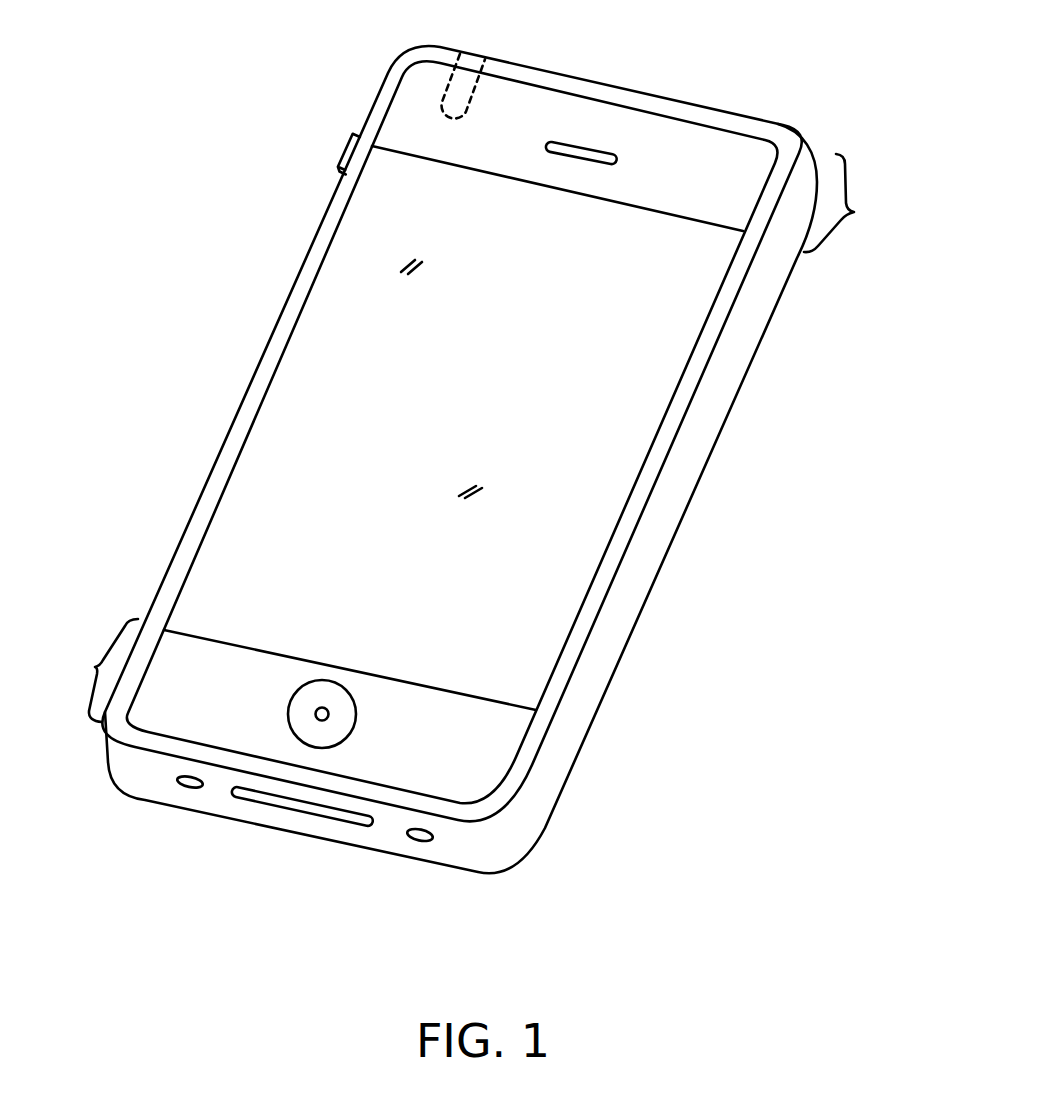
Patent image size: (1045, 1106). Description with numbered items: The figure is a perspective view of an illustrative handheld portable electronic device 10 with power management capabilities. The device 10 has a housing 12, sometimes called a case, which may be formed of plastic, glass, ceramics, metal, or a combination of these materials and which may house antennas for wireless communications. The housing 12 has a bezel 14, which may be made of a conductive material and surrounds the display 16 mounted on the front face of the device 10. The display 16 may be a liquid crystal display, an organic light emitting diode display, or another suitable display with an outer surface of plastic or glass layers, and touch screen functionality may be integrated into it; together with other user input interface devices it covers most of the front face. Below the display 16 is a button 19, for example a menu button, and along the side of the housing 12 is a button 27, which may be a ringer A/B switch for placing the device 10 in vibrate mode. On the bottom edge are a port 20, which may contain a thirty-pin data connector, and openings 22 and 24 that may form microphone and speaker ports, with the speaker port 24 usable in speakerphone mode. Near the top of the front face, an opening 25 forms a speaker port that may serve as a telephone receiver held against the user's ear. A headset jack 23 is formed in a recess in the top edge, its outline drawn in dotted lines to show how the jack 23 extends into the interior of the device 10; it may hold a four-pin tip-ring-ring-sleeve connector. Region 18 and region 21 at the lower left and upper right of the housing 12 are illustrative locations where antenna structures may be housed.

The electronic device 10 is at (862, 96).
The housing 12 is at (610, 640).
The bezel 14 is at (277, 337).
The display 16 is at (700, 267).
The region 18 is at (96, 670).
The button 19 is at (310, 750).
The port 20 is at (348, 824).
The region 21 is at (843, 203).
The opening 22 is at (188, 790).
The jack 23 is at (443, 92).
The speaker port 24 is at (422, 843).
The speaker port 25 is at (586, 150).
The button 27 is at (337, 152).